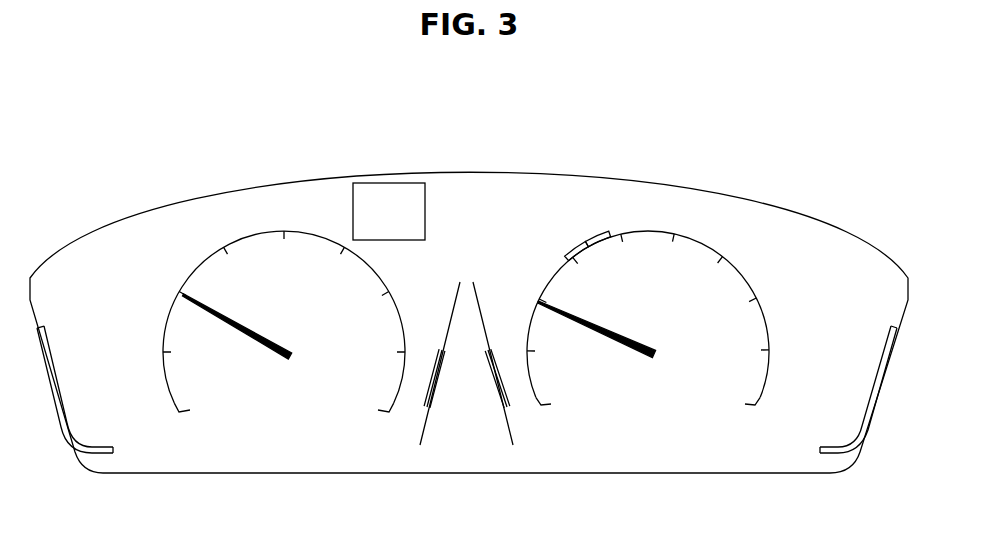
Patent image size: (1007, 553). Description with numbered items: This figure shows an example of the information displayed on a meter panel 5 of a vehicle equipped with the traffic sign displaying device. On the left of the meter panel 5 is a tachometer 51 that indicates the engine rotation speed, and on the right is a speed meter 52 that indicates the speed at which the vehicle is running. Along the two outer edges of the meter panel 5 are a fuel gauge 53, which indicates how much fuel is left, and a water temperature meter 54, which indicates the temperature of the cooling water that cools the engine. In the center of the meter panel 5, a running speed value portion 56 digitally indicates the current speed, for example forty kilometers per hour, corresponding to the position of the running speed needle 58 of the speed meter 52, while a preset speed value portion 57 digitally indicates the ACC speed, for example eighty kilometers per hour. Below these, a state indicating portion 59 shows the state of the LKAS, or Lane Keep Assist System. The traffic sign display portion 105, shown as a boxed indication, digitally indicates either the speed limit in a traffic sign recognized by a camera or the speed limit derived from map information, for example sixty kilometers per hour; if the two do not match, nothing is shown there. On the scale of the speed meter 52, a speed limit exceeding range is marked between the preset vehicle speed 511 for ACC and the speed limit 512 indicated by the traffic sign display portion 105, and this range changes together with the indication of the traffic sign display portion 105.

The meter panel 5 is at (125, 221).
The tachometer 51 is at (170, 398).
The speed meter 52 is at (733, 262).
The fuel gauge 53 is at (883, 393).
The water temperature meter 54 is at (50, 395).
The running speed value portion 56 is at (463, 205).
The preset speed value portion 57 is at (535, 198).
The running speed needle 58 is at (612, 342).
The state indicating portion 59 is at (463, 423).
The traffic sign display portion 105 is at (389, 183).
The preset vehicle speed 511 is at (613, 238).
The speed limit 512 is at (572, 262).